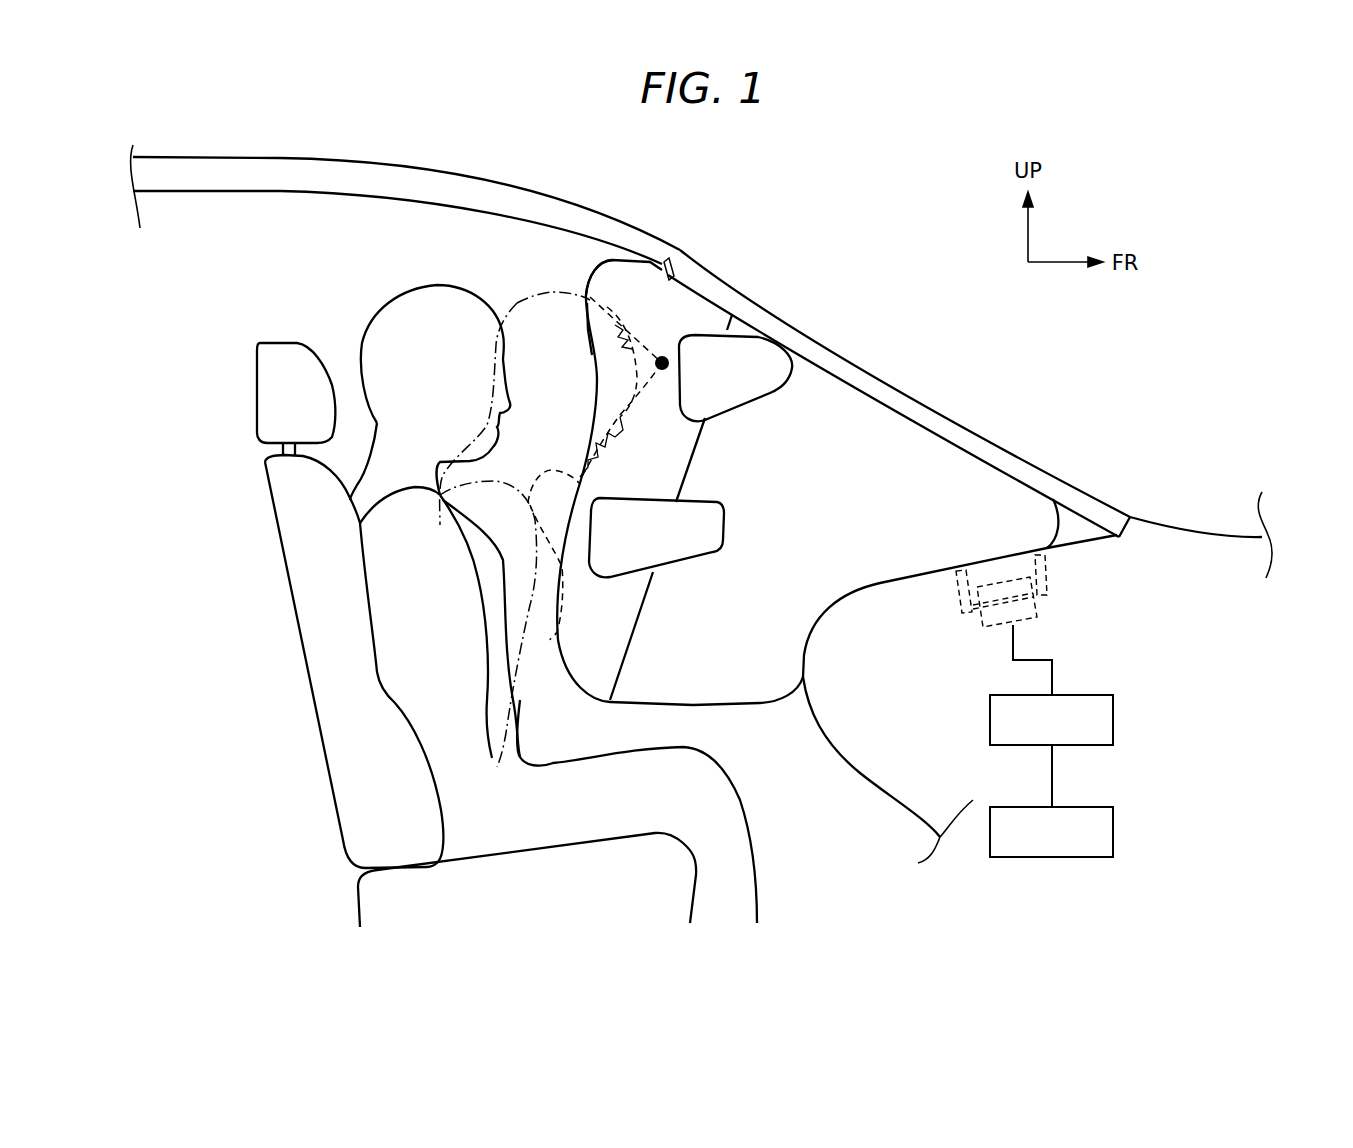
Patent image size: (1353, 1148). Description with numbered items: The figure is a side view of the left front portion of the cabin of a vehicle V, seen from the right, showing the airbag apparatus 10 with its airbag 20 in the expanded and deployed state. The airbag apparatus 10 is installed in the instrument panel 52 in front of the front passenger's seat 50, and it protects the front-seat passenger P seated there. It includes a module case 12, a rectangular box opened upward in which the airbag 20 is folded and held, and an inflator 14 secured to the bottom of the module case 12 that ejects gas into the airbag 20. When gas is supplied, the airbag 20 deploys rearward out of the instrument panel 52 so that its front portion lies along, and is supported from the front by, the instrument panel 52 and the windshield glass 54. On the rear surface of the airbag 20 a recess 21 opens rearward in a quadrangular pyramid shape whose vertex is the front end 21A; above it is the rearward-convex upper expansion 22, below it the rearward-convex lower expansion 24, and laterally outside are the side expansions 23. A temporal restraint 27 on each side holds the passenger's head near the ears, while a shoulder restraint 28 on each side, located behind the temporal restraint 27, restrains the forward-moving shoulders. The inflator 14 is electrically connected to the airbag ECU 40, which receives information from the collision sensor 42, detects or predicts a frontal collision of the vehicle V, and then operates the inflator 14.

The airbag apparatus 10 is at (827, 368).
The module case 12 is at (1047, 583).
The inflator 14 is at (1047, 610).
The airbag 20 is at (760, 703).
The recess 21 is at (607, 340).
The front end of the recess 21A is at (665, 358).
The upper expansion 22 is at (593, 262).
The side expansion 23 is at (591, 347).
The lower expansion 24 is at (550, 640).
The temporal restraint 27 is at (753, 367).
The shoulder restraint 28 is at (667, 547).
The airbag ECU 40 is at (1115, 723).
The collision sensor 42 is at (1115, 835).
The front passenger's seat 50 is at (300, 669).
The instrument panel 52 is at (853, 587).
The windshield glass 54 is at (950, 420).
The front-seat passenger P is at (420, 283).
The vehicle V is at (877, 192).